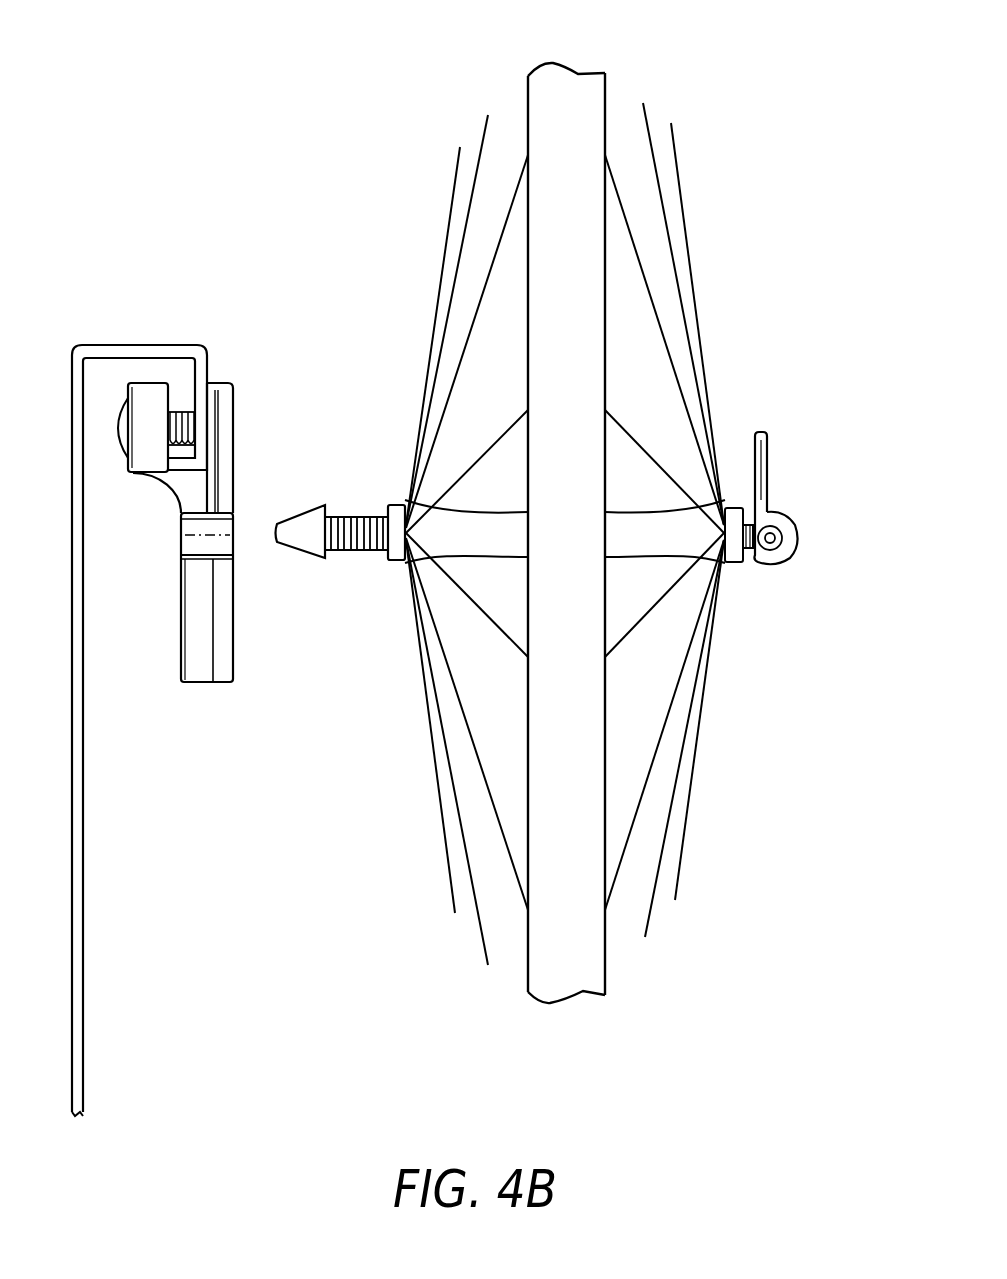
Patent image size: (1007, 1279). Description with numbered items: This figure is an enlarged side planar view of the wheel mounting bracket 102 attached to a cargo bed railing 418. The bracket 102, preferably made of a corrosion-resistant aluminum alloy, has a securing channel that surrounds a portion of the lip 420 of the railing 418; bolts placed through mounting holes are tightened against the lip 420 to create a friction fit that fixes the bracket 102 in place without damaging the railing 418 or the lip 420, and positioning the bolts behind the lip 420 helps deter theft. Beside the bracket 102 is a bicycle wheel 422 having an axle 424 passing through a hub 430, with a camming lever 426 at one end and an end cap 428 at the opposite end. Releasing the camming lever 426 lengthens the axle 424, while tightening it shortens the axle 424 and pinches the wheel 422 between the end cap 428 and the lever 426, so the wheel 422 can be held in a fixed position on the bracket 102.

The cargo bed railing 418 is at (140, 340).
The wheel mounting bracket 102 is at (231, 410).
The lip 420 is at (178, 452).
The bicycle wheel 422 is at (563, 62).
The axle 424 is at (359, 565).
The camming lever 426 is at (818, 517).
The end cap 428 is at (309, 495).
The hub 430 is at (393, 566).